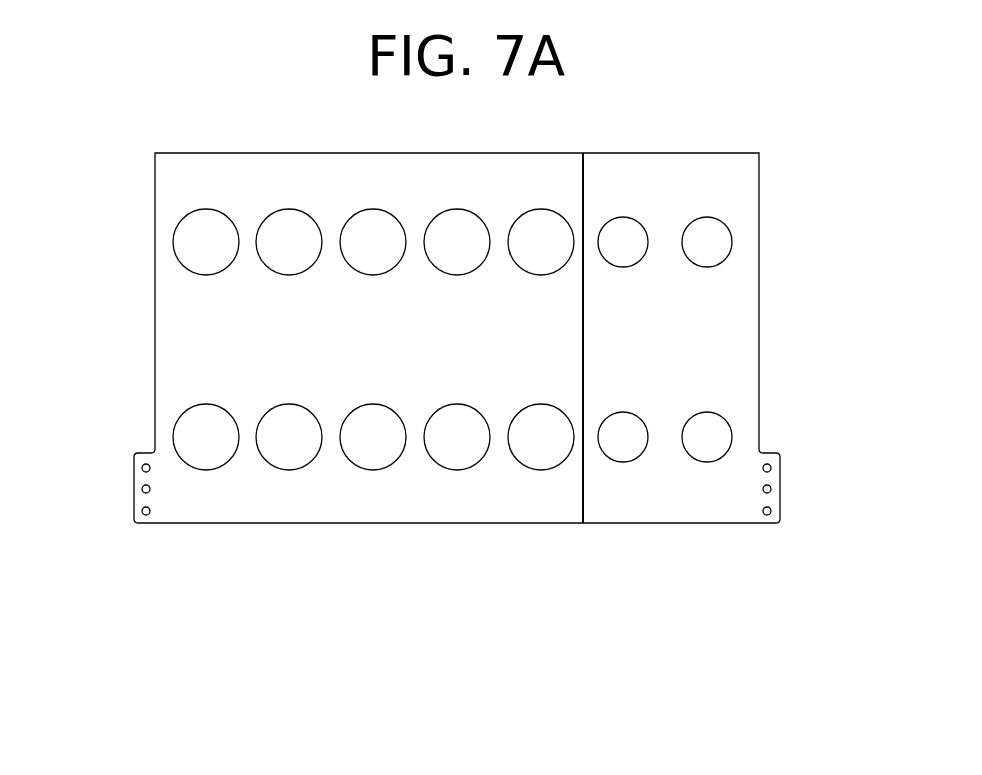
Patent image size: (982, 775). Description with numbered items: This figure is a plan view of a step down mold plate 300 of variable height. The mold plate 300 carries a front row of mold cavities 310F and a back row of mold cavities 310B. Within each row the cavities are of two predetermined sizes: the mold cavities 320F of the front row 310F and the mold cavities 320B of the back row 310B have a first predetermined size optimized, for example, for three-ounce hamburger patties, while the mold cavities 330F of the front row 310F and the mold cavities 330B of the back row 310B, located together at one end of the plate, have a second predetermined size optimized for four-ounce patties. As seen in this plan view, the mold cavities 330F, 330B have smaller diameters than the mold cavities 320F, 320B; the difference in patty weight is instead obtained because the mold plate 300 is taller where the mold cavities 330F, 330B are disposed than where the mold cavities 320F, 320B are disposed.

The step down mold plate 300 is at (786, 221).
The front row of mold cavities 310F is at (125, 202).
The back row of mold cavities 310B is at (125, 405).
The mold cavities of the front row 320F is at (583, 535).
The mold cavities of the back row 320B is at (583, 535).
The mold cavities of the front row 330F is at (730, 535).
The mold cavities of the back row 330B is at (730, 535).